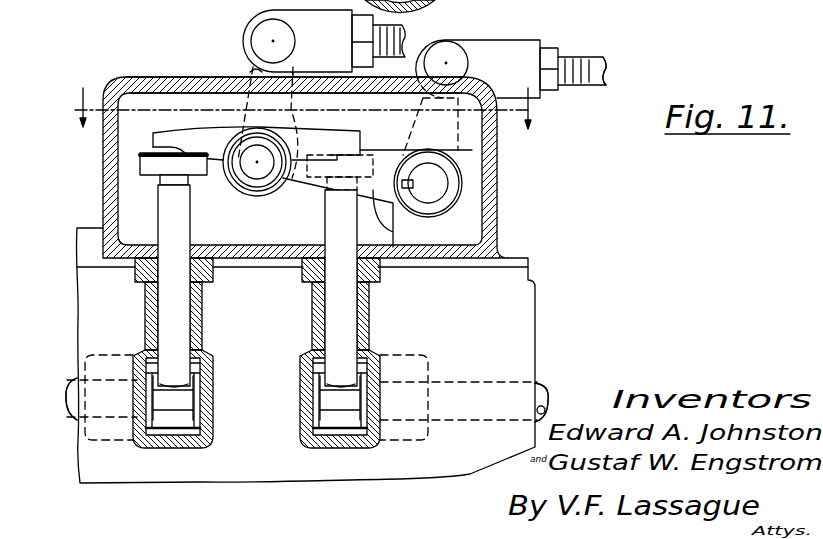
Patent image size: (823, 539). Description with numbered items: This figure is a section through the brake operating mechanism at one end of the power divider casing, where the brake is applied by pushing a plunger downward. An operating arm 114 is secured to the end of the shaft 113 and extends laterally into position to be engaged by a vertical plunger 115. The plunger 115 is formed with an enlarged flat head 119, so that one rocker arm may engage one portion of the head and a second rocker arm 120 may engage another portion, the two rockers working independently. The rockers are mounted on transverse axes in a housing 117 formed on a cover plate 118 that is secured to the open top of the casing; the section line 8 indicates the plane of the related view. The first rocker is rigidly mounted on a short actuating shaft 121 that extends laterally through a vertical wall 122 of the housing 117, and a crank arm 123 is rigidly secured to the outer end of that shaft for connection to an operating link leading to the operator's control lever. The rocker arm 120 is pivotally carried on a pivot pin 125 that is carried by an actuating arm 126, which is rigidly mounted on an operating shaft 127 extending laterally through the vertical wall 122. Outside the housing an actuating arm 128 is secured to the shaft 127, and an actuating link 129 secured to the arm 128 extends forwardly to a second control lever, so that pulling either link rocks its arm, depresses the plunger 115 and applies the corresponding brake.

The section line 8- 8 is at (303, 121).
The shaft 113 is at (70, 362).
The operating arm 114 is at (180, 403).
The vertical plunger 115 is at (177, 228).
The housing 117 is at (157, 76).
The cover plate 118 is at (530, 258).
The enlarged flat head 119 is at (148, 163).
The rocker arm 120 is at (341, 138).
The actuating shaft 121 is at (405, 34).
The vertical wall 122 is at (185, 102).
The crank arm 123 is at (252, 67).
The pivot pin 125 is at (258, 168).
The actuating arm 126 is at (388, 230).
The operating shaft 127 is at (433, 182).
The actuating arm 128 is at (452, 138).
The actuating link 129 is at (585, 58).